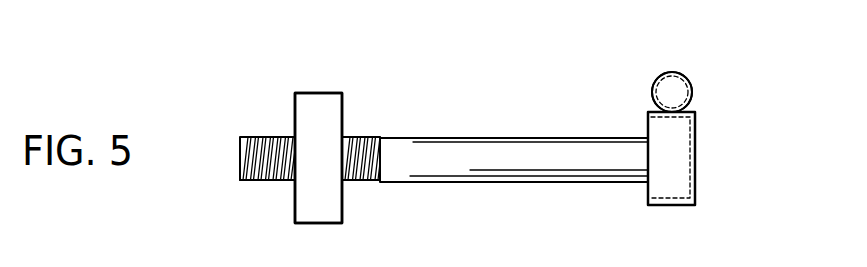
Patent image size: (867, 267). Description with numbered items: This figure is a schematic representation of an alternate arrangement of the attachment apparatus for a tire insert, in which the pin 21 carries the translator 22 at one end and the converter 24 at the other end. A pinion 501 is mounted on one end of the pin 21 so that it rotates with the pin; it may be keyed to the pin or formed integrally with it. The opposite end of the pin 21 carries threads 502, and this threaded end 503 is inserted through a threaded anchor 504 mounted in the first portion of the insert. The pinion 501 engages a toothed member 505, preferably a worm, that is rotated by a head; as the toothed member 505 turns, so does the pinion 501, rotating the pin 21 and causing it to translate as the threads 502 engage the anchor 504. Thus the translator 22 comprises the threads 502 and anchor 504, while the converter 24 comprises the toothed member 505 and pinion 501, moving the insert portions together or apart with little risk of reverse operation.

The pin 21 is at (443, 148).
The translator 22 is at (284, 124).
The converter 24 is at (691, 63).
The pinion 501 is at (664, 157).
The threads 502 is at (250, 160).
The threaded end 503 is at (252, 198).
The threaded anchor 504 is at (333, 126).
The toothed member 505 is at (660, 96).